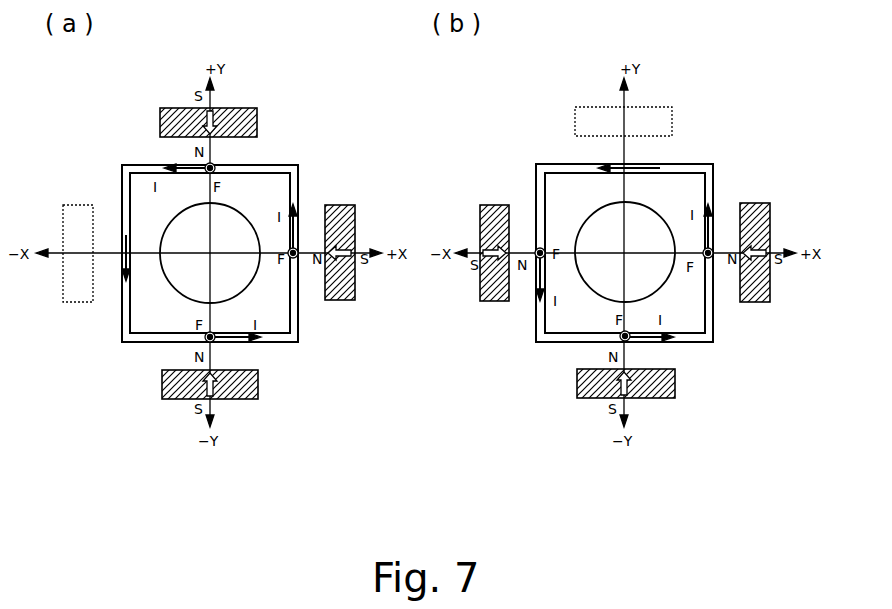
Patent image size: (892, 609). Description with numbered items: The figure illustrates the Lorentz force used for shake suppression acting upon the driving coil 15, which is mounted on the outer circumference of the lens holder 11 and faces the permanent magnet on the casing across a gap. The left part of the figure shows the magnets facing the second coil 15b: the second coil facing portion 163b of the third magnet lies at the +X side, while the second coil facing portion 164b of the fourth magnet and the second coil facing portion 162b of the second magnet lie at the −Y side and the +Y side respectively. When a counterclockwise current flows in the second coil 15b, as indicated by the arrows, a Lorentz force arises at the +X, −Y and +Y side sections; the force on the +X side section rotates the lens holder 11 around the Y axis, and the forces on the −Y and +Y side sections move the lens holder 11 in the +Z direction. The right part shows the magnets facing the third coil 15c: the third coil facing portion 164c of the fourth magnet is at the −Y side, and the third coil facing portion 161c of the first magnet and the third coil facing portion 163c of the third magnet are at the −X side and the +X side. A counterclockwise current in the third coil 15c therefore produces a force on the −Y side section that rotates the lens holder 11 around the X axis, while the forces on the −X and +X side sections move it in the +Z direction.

The driving coil 15 is at (262, 165).
The second coil 15b is at (305, 328).
The third coil 15c is at (677, 340).
The lens holder 11 is at (275, 190).
The third coil facing portion of the first magnet 161c is at (490, 205).
The second coil facing portion of the second magnet 162b is at (235, 113).
The second coil facing portion of the third magnet 163b is at (335, 300).
The third coil facing portion of the third magnet 163c is at (768, 220).
The second coil facing portion of the fourth magnet 164b is at (258, 378).
The third coil facing portion of the fourth magnet 164c is at (675, 380).